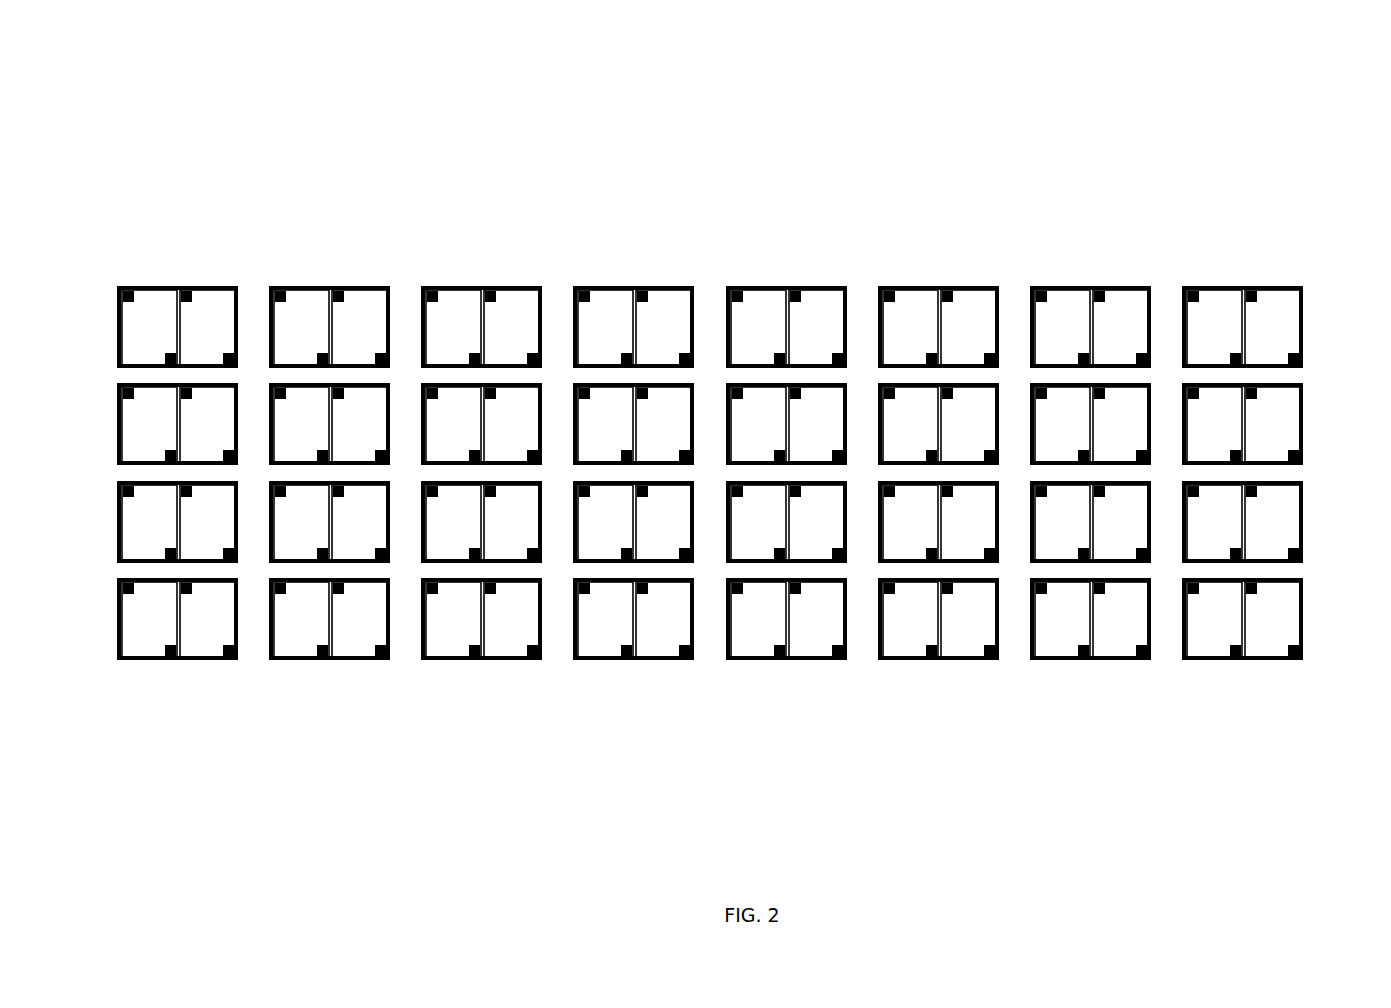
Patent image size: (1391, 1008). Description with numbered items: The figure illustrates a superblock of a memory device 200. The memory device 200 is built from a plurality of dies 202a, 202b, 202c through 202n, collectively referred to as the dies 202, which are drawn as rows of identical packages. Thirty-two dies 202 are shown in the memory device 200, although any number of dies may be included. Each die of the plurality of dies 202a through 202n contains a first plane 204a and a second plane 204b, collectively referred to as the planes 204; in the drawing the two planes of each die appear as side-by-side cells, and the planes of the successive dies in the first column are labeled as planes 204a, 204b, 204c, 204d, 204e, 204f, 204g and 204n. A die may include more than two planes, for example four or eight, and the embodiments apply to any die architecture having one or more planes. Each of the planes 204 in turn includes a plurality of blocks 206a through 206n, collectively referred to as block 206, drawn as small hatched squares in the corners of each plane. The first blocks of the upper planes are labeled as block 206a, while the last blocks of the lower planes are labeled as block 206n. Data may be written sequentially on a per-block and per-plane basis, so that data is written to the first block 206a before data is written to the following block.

The memory device 200 is at (134, 44).
The dies 202 is at (828, 439).
The die 202a is at (137, 327).
The die 202b is at (137, 424).
The die 202c is at (137, 522).
The die 202n is at (137, 619).
The planes 204 is at (320, 343).
The first plane 204a is at (175, 347).
The second plane 204b is at (233, 347).
The plane P2 204c is at (175, 444).
The plane P3 204d is at (233, 444).
The plane P4 204e is at (175, 542).
The plane P5 204f is at (233, 542).
The plane P6 204g is at (175, 639).
The plane Pn 204n is at (233, 639).
The block 206 is at (494, 289).
The block B0 206a is at (130, 289).
The block 206n is at (322, 657).